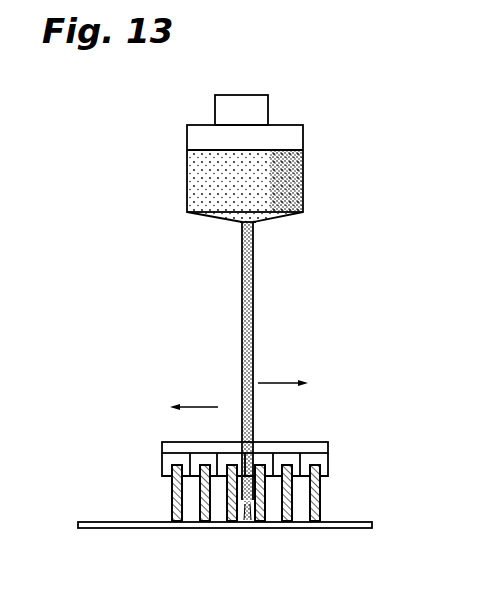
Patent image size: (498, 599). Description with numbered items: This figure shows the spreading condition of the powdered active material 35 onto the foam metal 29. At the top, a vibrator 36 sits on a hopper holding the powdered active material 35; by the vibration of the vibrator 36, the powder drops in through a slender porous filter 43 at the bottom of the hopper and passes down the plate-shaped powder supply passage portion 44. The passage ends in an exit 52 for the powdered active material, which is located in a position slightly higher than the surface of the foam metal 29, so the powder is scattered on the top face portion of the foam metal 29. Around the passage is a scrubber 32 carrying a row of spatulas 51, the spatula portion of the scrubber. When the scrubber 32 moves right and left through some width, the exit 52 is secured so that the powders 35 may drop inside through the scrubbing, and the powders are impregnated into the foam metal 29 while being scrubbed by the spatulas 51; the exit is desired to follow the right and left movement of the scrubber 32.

The vibrator 36 is at (243, 102).
The powdered active material 35 is at (302, 192).
The slender porous filter 43 is at (257, 228).
The plate-shaped powder supply passage portion 44 is at (243, 340).
The scrubber 32 is at (308, 446).
The spatula portion of the scrubber 51 is at (318, 488).
The exit for the powdered active material 52 is at (258, 528).
The foam metal 29 is at (128, 528).